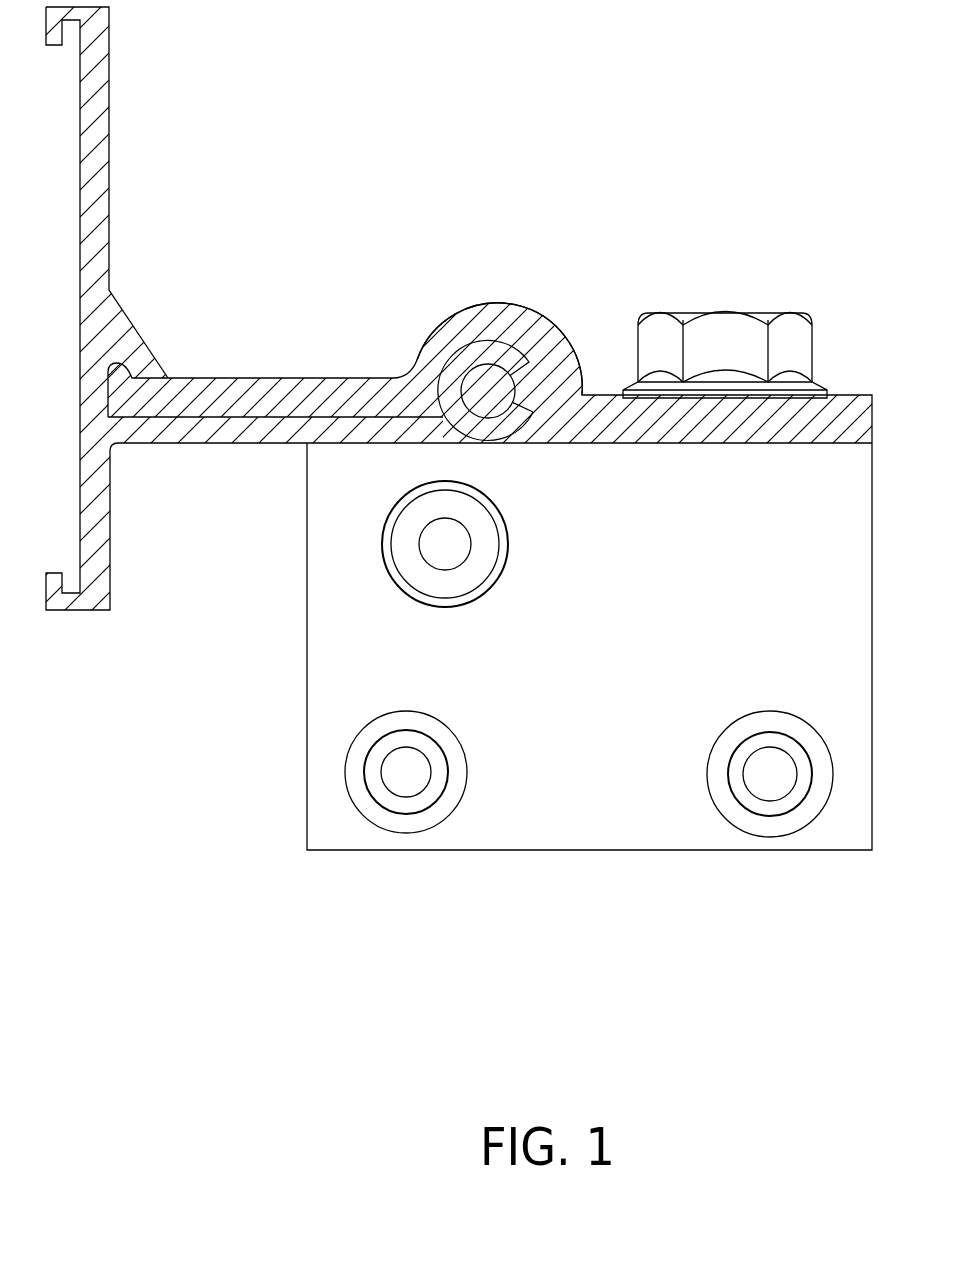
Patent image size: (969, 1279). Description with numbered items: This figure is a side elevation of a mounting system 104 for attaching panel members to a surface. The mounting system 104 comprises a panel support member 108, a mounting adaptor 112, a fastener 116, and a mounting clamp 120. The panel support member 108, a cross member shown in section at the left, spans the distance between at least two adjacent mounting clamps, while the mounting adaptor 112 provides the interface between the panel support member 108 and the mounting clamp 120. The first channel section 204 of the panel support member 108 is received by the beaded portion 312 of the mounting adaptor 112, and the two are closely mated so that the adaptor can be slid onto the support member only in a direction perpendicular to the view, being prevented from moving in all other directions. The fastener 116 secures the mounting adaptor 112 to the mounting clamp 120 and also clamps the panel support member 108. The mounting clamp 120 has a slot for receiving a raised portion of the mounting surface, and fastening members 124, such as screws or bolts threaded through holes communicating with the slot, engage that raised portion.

The mounting system 104 is at (592, 105).
The panel support member 108 is at (102, 20).
The mounting adaptor 112 is at (487, 312).
The fastener 116 is at (737, 315).
The mounting clamp 120 is at (573, 828).
The fastening members 124 is at (398, 813).
The first channel section 204 is at (465, 372).
The beaded portion 312 is at (549, 290).